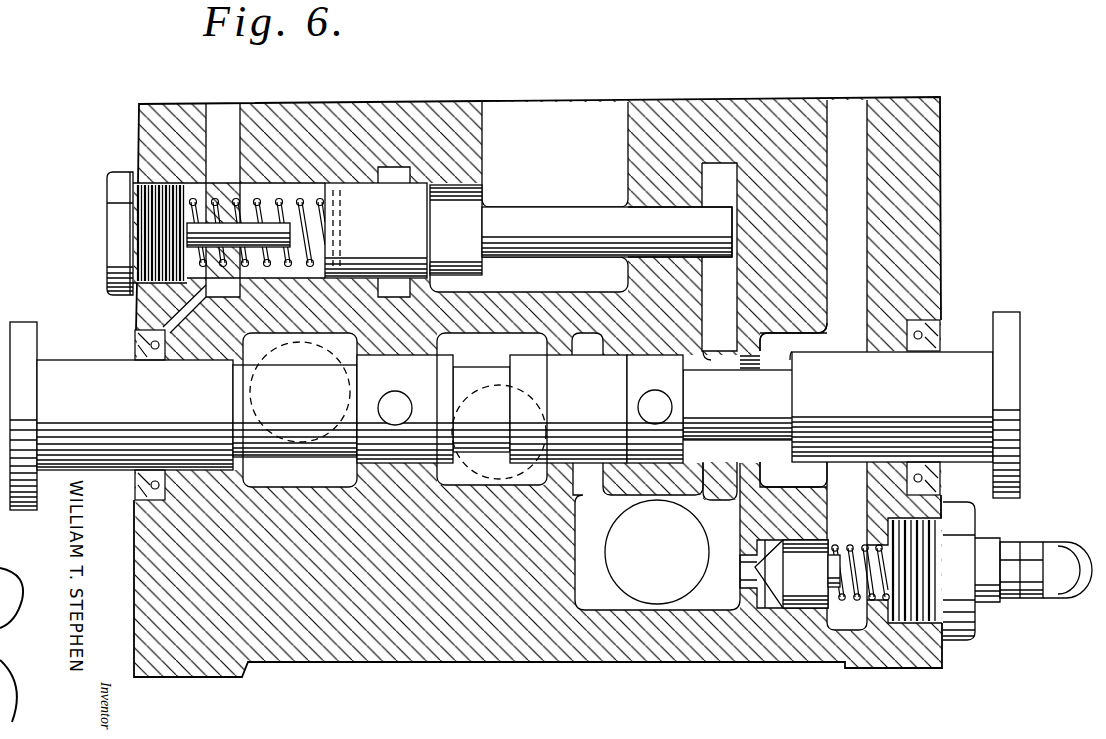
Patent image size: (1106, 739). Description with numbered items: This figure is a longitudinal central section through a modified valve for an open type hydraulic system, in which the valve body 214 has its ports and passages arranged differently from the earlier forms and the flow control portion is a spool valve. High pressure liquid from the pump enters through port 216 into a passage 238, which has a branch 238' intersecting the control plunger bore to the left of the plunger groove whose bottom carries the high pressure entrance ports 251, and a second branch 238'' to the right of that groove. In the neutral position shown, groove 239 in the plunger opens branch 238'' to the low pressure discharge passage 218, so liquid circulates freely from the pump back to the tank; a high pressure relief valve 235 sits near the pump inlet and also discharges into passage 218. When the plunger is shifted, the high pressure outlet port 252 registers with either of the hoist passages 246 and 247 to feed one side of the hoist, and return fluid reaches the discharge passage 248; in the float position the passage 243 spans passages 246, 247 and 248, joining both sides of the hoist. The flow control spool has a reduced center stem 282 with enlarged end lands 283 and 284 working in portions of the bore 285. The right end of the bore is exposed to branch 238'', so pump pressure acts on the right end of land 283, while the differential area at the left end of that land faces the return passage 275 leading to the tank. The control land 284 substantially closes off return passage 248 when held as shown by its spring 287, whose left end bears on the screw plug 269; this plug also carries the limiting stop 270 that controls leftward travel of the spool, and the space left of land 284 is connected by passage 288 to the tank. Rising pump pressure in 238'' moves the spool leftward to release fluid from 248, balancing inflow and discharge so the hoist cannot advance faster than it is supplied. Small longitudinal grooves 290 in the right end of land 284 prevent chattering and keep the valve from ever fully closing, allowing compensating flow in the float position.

The valve body 214 is at (930, 217).
The port 216 is at (637, 583).
The low pressure discharge passage 218 is at (850, 108).
The high pressure relief valve 235 is at (800, 582).
The passage 238 is at (656, 536).
The branch 238' is at (577, 362).
The second branch 238'' is at (765, 406).
The groove 239 is at (778, 400).
The passage 243 is at (256, 461).
The hoist passage 246 is at (492, 409).
The hoist passage 247 is at (259, 343).
The discharge passage 248 is at (400, 322).
The high pressure entrance ports 251 is at (640, 407).
The high pressure outlet port 252 is at (384, 398).
The screw plug 269 is at (120, 178).
The limiting stop 270 is at (187, 233).
The return passage 275 is at (603, 108).
The reduced center stem 282 is at (562, 213).
The land 283 is at (636, 208).
The control land 284 is at (376, 230).
The bore 285 is at (485, 198).
The spring 287 is at (258, 200).
The passage 288 is at (224, 110).
The small longitudinal grooves 290 is at (416, 195).